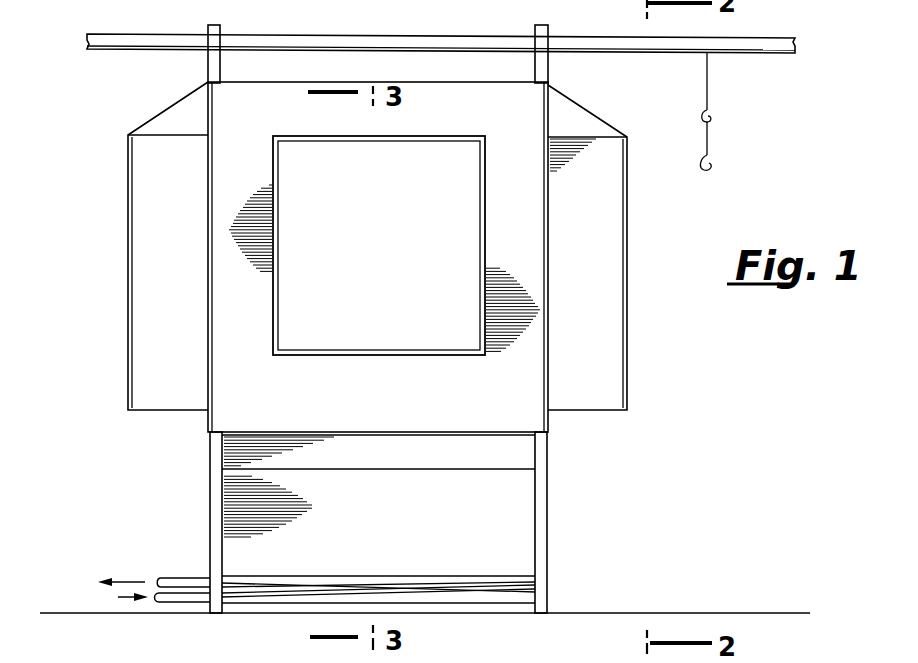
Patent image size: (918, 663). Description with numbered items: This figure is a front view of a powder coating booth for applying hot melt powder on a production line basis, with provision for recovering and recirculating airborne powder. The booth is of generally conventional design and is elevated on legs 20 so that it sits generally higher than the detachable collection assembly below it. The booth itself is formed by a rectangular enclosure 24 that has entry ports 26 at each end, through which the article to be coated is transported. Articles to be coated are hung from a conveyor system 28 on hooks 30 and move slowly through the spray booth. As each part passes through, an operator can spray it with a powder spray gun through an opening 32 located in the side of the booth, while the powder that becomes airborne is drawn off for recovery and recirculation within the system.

The legs 20 is at (218, 495).
The rectangular enclosure 24 is at (225, 408).
The entry ports 26 is at (138, 285).
The conveyor system 28 is at (750, 50).
The hooks 30 is at (705, 168).
The opening 32 is at (486, 264).